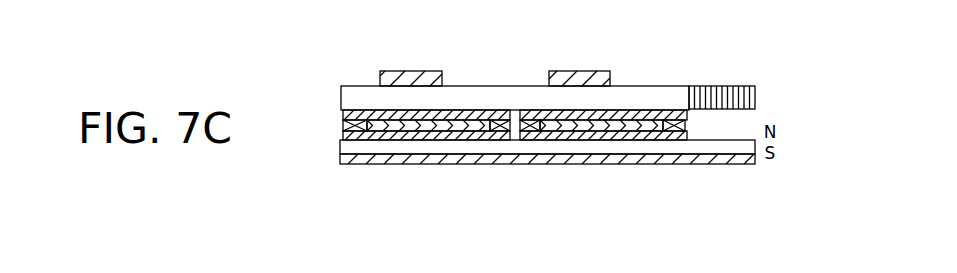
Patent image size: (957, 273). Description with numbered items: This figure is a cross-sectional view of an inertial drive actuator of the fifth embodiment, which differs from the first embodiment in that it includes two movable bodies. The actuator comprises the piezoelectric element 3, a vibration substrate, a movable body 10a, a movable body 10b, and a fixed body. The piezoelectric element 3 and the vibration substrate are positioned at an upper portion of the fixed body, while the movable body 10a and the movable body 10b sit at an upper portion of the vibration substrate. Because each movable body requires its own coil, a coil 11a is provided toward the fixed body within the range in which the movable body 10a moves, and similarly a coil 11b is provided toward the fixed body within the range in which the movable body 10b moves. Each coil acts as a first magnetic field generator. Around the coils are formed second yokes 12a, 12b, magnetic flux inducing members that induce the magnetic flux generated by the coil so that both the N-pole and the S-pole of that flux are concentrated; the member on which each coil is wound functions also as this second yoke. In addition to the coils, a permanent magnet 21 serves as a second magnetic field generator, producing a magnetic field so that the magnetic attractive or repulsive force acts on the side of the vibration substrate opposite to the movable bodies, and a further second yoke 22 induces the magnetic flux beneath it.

The piezoelectric element 3 is at (719, 84).
The movable body 10a is at (430, 70).
The movable body 10b is at (603, 70).
The coil 11a is at (355, 131).
The coil 11b is at (528, 131).
The second yoke 12a is at (400, 139).
The second yoke 12b is at (620, 137).
The permanent magnet 21 is at (340, 149).
The second yoke 22 is at (747, 164).